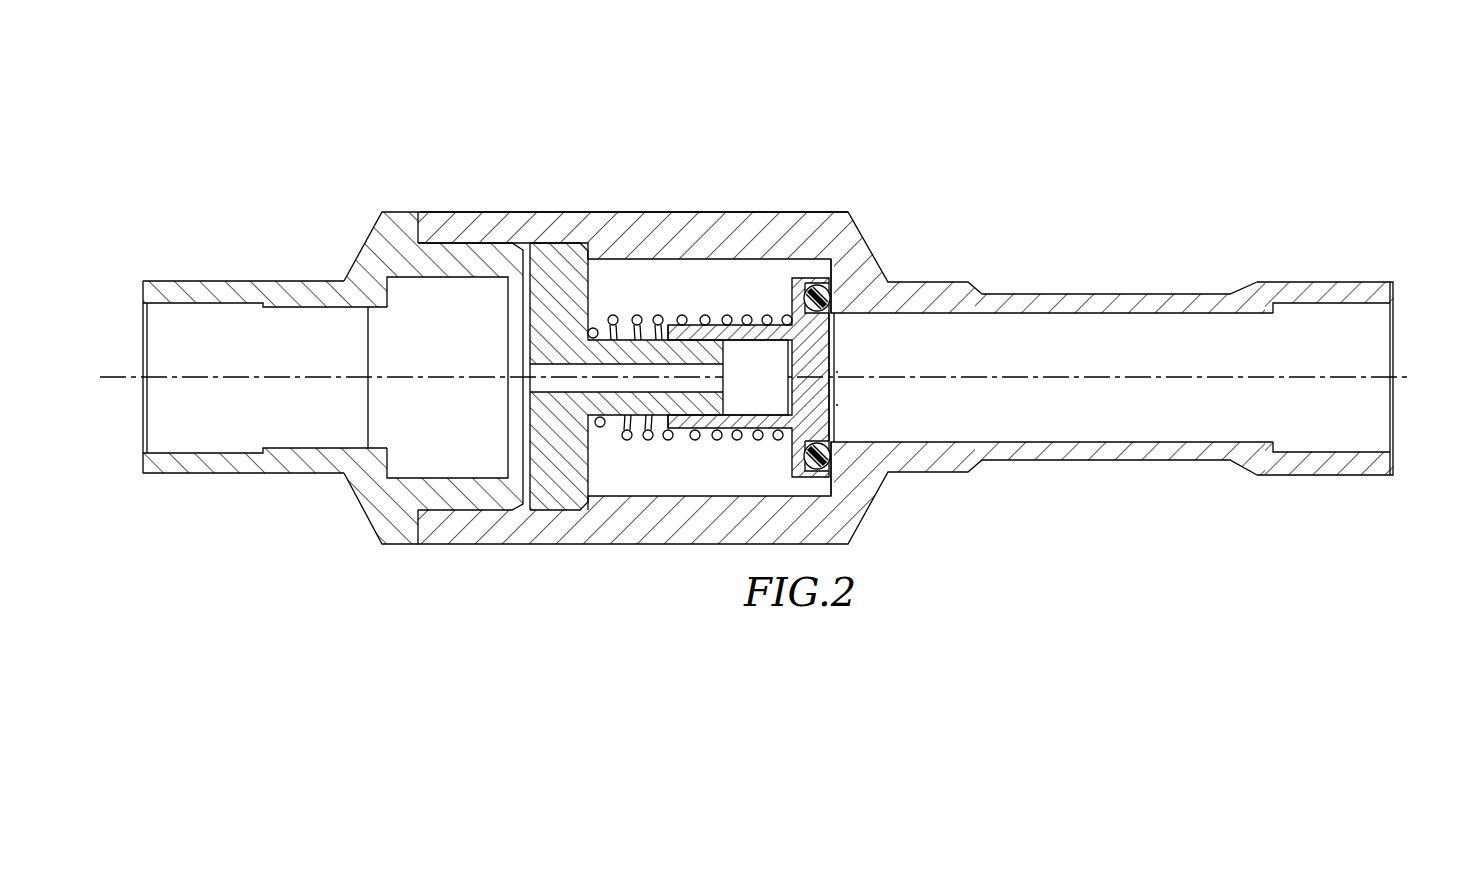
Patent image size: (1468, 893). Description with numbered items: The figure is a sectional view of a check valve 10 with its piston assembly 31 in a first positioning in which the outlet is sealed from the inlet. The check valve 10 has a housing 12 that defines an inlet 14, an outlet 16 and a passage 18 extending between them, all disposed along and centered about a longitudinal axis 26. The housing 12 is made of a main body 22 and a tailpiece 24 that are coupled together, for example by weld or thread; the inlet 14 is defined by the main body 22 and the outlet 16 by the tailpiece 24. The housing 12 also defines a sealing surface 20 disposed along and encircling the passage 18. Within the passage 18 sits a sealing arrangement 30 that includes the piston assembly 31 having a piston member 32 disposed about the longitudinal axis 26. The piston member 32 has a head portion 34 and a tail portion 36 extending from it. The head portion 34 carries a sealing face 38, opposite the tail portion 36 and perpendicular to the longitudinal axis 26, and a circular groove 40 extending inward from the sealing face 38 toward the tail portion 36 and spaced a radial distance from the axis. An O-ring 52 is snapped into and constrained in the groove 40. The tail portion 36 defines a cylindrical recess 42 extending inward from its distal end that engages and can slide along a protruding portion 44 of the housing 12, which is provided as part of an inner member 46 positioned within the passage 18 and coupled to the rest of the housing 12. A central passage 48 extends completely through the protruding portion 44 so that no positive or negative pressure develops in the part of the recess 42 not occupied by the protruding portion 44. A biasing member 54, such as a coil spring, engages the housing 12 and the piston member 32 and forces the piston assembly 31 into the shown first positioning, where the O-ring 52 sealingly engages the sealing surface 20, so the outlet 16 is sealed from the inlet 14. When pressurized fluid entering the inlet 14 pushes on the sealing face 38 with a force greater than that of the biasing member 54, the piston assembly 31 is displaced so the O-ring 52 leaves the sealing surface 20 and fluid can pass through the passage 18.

The check valve 10 is at (748, 108).
The housing 12 is at (700, 324).
The inlet 14 is at (1404, 308).
The outlet 16 is at (131, 331).
The passage 18 is at (1023, 330).
The sealing surface 20 is at (848, 266).
The main body 22 is at (653, 222).
The tailpiece 24 is at (300, 372).
The longitudinal axis 26 is at (1112, 377).
The sealing arrangement 30 is at (801, 380).
The piston assembly 31 is at (840, 405).
The piston member 32 is at (787, 432).
The head portion 34 is at (813, 350).
The tail portion 36 is at (690, 376).
The sealing face 38 is at (840, 372).
The circular groove 40 is at (804, 300).
The cylindrical recess 42 is at (747, 403).
The protruding portion 44 is at (620, 420).
The inner member 46 is at (538, 449).
The central passage 48 is at (545, 372).
The O-ring 52 is at (821, 455).
The biasing member 54 is at (707, 318).